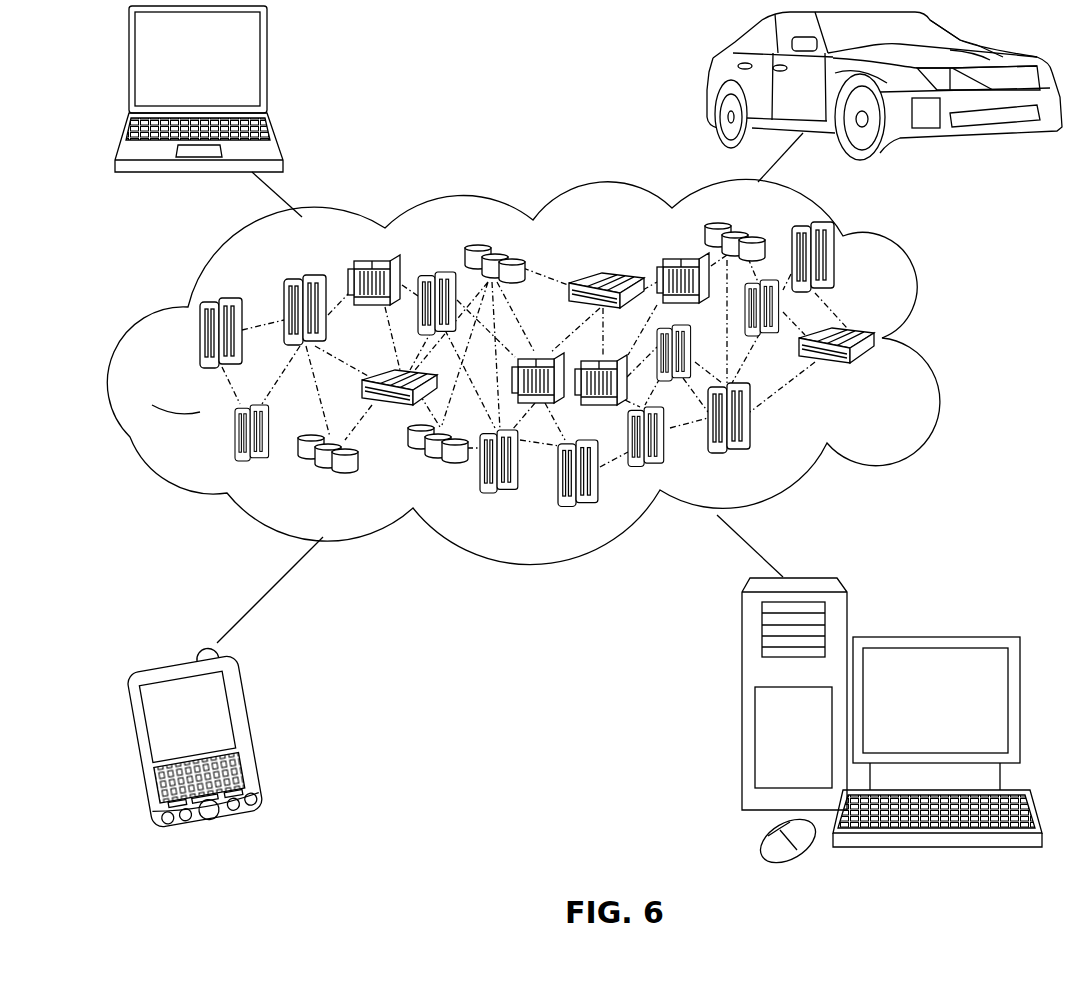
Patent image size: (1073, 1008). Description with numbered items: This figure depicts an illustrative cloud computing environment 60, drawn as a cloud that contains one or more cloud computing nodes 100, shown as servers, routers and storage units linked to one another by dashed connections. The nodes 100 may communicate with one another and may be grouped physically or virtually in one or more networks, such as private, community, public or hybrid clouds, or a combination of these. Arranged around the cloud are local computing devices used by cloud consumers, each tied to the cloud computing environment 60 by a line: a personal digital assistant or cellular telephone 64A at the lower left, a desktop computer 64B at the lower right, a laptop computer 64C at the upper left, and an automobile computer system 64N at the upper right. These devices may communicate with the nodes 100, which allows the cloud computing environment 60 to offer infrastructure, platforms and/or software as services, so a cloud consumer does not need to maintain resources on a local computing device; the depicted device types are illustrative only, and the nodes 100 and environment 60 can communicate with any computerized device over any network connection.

The cloud computing environment 60 is at (930, 343).
The cloud computing nodes 100 is at (880, 378).
The personal digital assistant (PDA) or cellular telephone 64A is at (258, 730).
The desktop computer 64B is at (932, 636).
The laptop computer 64C is at (270, 67).
The automobile computer system 64N is at (712, 82).